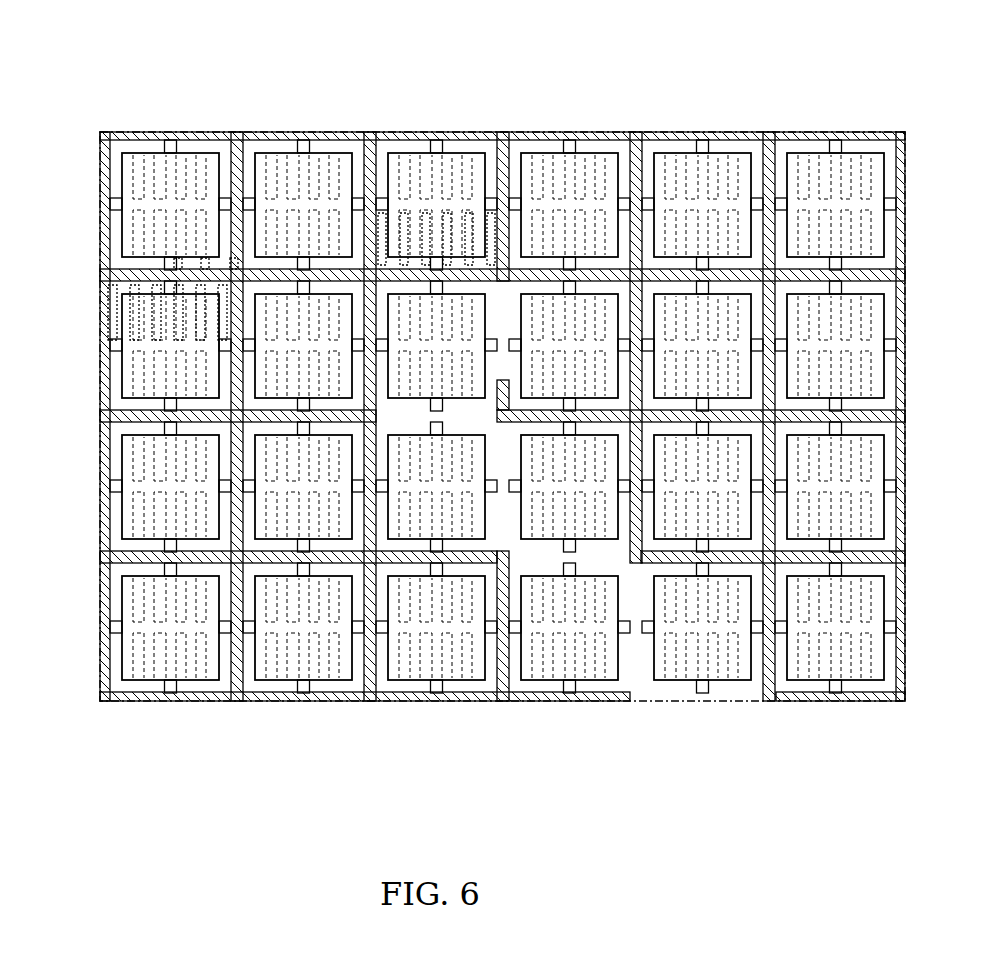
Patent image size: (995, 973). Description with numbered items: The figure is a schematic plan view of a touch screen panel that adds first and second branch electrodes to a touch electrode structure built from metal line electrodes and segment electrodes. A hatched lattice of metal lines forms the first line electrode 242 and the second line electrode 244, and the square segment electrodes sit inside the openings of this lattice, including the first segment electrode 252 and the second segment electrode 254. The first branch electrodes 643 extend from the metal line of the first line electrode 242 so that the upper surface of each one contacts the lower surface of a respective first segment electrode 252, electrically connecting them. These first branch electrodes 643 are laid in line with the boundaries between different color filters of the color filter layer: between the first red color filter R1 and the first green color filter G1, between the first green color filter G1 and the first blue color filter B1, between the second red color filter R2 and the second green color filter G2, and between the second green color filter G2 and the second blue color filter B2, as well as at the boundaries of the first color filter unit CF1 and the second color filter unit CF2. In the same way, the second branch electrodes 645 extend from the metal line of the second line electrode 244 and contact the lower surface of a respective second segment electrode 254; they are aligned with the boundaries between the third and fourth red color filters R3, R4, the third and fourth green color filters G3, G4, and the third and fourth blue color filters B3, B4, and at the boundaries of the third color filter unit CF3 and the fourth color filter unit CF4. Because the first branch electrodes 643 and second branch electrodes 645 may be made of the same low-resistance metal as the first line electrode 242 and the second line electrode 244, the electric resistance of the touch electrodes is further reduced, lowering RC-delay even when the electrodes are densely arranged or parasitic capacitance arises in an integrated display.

The first line electrode 242 is at (500, 392).
The second line electrode 244 is at (297, 417).
The first segment electrode 252 is at (545, 180).
The second segment electrode 254 is at (275, 313).
The first branch electrode 643 is at (421, 147).
The second branch electrode 645 is at (126, 339).
The first color filter unit CF1 is at (406, 147).
The second color filter unit CF2 is at (483, 147).
The third color filter unit CF3 is at (126, 310).
The fourth color filter unit CF4 is at (230, 60).
The first red color filter R1 is at (403, 213).
The first green color filter G1 is at (422, 213).
The first blue color filter B1 is at (447, 213).
The second red color filter R2 is at (467, 213).
The second green color filter G2 is at (490, 213).
The second blue color filter B2 is at (512, 213).
The third red color filter R3 is at (128, 320).
The third green color filter G3 is at (140, 305).
The third blue color filter B3 is at (147, 327).
The fourth red color filter R4 is at (178, 282).
The fourth green color filter G4 is at (205, 282).
The fourth blue color filter B4 is at (235, 278).